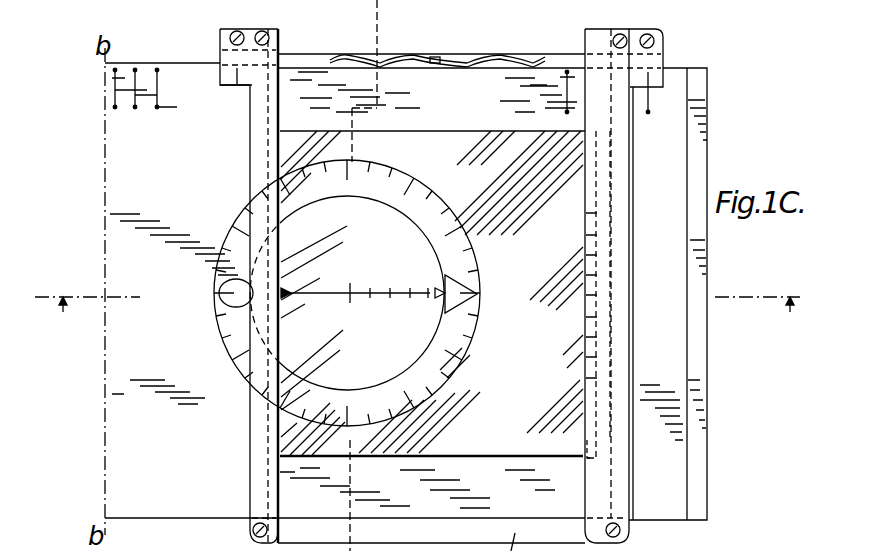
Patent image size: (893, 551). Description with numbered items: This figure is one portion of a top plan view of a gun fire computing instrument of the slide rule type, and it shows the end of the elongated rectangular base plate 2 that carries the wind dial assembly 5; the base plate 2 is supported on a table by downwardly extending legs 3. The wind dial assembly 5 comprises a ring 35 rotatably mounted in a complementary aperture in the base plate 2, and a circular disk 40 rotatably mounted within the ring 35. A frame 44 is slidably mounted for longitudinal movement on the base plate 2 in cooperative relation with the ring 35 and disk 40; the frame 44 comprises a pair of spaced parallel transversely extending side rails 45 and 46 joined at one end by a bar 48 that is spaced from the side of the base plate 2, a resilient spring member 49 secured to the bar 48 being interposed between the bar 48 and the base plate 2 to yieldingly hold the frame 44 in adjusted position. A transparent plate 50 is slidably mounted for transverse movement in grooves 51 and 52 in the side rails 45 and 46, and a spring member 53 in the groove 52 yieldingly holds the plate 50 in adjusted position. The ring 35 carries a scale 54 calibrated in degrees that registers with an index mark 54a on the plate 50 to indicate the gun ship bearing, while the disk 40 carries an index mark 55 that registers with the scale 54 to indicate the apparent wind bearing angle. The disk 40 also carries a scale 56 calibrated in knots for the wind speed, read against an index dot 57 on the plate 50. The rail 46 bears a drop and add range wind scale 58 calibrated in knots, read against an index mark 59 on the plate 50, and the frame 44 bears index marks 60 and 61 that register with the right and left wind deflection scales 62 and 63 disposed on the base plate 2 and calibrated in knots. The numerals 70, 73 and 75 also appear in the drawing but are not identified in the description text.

The base plate 2 is at (690, 366).
The legs 3 is at (417, 320).
The wind dial assembly 5 is at (235, 213).
The ring 35 is at (457, 330).
The circular disk 40 is at (403, 350).
The frame 44 is at (250, 137).
The side rail 45 is at (250, 423).
The side rail 46 is at (593, 481).
The bar 48 is at (567, 28).
The resilient spring member 49 is at (502, 60).
The transparent plate 50 is at (473, 457).
The groove 51 is at (267, 480).
The groove 52 is at (608, 500).
The spring member 53 is at (580, 460).
The scale 54 is at (413, 190).
The index mark 54a is at (355, 145).
The index mark 55 is at (448, 275).
The scale 56 is at (403, 302).
The index dot 57 is at (413, 268).
The drop and add range wind scale 58 is at (598, 322).
The index mark 59 is at (583, 297).
The index mark 60 is at (237, 79).
The index mark 61 is at (650, 78).
The right wind deflection scale 62 is at (127, 127).
The left wind deflection scale 63 is at (648, 103).
The stop block 70 is at (456, 31).
The upper element 73 is at (122, 3).
The center index line 75 is at (413, 3).